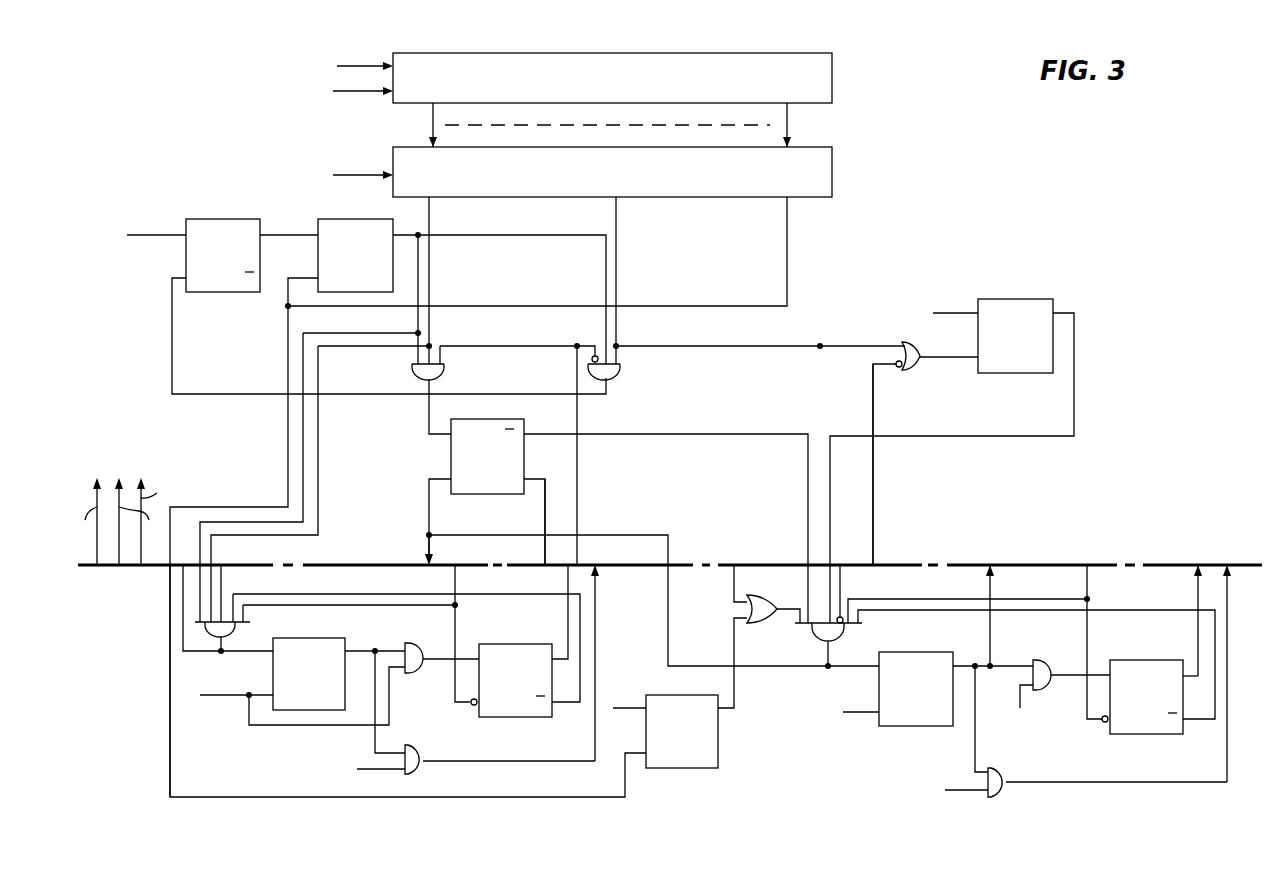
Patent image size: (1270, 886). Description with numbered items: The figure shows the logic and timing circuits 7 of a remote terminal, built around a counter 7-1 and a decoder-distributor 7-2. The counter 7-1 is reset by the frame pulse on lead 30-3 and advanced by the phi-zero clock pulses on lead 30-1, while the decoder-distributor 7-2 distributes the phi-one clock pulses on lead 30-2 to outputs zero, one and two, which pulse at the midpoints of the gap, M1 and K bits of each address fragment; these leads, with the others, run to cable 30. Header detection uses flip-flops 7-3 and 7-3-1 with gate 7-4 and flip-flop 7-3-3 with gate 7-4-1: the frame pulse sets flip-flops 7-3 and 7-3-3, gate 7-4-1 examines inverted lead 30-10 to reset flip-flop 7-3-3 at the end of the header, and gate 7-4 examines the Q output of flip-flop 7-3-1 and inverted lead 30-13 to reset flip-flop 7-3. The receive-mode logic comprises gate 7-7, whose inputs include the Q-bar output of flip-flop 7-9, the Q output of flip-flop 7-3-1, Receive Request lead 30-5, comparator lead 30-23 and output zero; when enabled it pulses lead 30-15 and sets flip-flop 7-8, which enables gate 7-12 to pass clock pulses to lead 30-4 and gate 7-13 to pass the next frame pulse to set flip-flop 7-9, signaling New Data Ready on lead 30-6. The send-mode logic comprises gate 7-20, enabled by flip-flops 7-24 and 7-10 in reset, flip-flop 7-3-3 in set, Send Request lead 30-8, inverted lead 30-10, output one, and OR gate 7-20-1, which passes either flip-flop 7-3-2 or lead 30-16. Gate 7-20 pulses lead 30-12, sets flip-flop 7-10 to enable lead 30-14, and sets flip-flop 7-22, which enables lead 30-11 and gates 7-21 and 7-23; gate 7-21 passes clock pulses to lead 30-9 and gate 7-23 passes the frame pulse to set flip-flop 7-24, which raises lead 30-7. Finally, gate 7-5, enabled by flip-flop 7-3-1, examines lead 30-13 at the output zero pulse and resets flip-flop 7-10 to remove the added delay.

The logic and timing circuits 7 is at (1075, 125).
The counter 7-1 is at (832, 78).
The decoder-distributor 7-2 is at (832, 172).
The flip-flop 7-3 is at (225, 219).
The flip-flop 7-3-1 is at (342, 219).
The flip-flop 7-3-2 is at (718, 753).
The flip-flop 7-3-3 is at (1018, 374).
The gate 7-4 is at (620, 371).
The gate 7-4-1 is at (914, 371).
The gate 7-5 is at (444, 371).
The gate 7-7 is at (237, 631).
The flip-flop 7-8 is at (299, 638).
The flip-flop 7-9 is at (512, 644).
The flip-flop 7-10 is at (451, 456).
The gate 7-12 is at (420, 740).
The gate 7-13 is at (420, 636).
The gate 7-20 is at (833, 636).
The OR gate 7-20-1 is at (766, 623).
The gate 7-21 is at (1007, 790).
The flip-flop 7-22 is at (916, 652).
The gate 7-23 is at (1046, 648).
The flip-flop 7-24 is at (1141, 660).
The cable 30 is at (1028, 565).
The output lead 30-1 is at (334, 91).
The output lead 30-2 is at (333, 175).
The output lead 30-3 is at (337, 66).
The lead 30-4 is at (595, 590).
The Receive Request lead 30-5 is at (455, 580).
The lead 30-6 is at (568, 580).
The lead 30-7 is at (1198, 598).
The Send Request lead 30-8 is at (1087, 582).
The lead 30-9 is at (1227, 576).
The lead 30-10 is at (873, 528).
The lead 30-11 is at (990, 583).
The lead 30-12 is at (429, 548).
The lead 30-13 is at (577, 548).
The lead 30-14 is at (545, 548).
The lead 30-15 is at (183, 592).
The lead 30-16 is at (734, 582).
The lead 30-23 is at (222, 580).